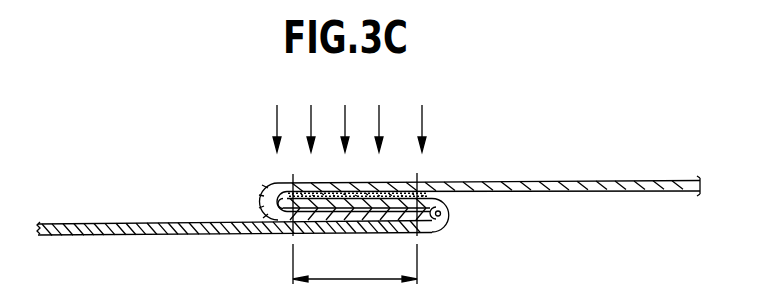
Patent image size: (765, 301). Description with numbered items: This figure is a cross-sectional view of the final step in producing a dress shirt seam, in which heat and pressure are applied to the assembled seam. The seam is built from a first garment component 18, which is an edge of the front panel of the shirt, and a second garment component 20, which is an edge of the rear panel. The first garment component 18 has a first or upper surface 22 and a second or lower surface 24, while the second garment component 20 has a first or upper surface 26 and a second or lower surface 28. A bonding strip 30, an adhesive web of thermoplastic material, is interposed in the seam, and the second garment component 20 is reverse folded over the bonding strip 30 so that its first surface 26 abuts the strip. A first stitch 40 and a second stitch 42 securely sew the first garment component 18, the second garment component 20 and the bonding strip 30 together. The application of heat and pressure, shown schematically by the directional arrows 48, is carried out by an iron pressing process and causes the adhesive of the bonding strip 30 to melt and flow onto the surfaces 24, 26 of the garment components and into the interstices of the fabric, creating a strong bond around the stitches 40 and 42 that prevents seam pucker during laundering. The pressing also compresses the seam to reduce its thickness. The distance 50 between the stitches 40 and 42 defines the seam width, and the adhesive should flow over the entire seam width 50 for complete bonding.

The first garment component 18 is at (232, 230).
The first or upper surface of the first garment component 22 is at (121, 222).
The second or lower surface of the first garment component 24 is at (185, 237).
The second garment component 20 is at (489, 188).
The second or lower surface of the second garment component 28 is at (505, 180).
The first or upper surface of the second garment component 26 is at (622, 192).
The first stitch 40 is at (291, 178).
The second stitch 42 is at (416, 179).
The bonding strip 30 is at (432, 201).
The directional arrows 48 is at (422, 119).
The distance between stitches 50 is at (381, 275).